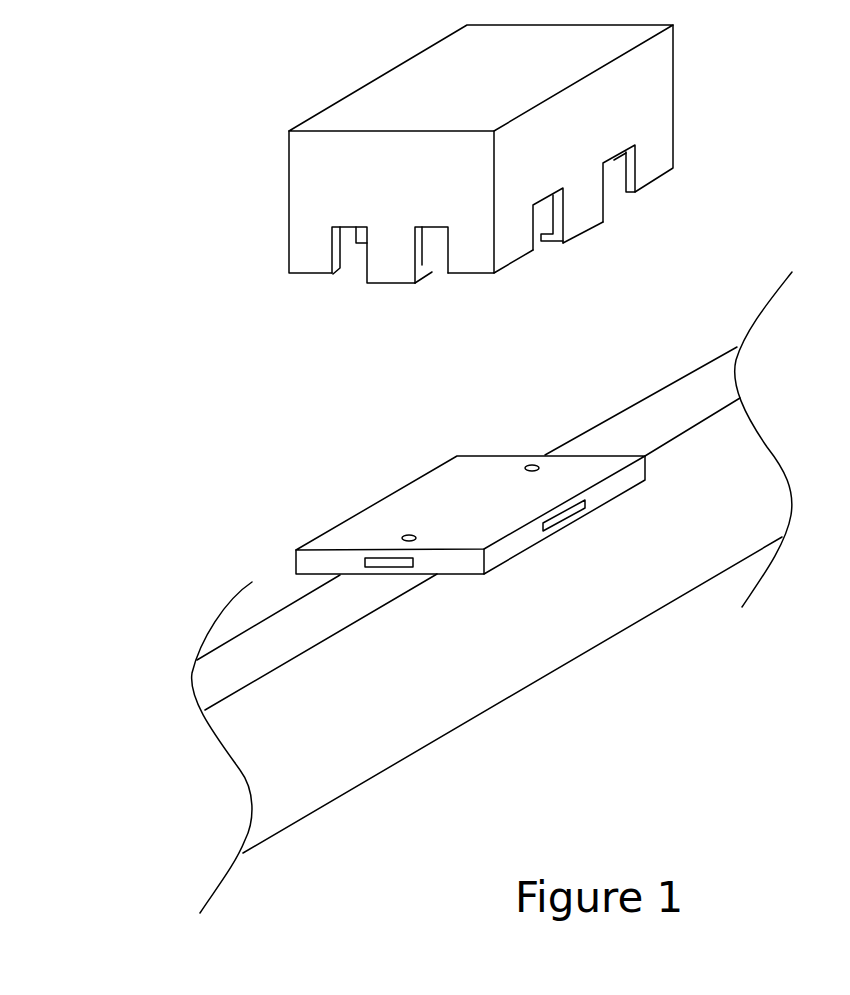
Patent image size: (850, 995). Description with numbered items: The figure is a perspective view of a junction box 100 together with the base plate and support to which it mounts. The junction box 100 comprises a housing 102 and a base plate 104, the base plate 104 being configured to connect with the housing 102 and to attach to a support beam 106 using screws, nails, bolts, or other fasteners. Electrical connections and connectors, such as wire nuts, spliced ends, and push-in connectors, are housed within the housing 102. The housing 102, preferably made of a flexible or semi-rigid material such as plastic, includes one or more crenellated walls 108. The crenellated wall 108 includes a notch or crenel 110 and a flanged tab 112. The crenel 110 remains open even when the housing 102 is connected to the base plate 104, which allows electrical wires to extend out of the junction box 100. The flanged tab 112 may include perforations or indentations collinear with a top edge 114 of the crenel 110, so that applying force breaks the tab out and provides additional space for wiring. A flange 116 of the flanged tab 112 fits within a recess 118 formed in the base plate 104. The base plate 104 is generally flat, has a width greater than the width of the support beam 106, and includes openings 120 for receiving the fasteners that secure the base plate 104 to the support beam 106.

The junction box 100 is at (172, 90).
The housing 102 is at (703, 93).
The base plate 104 is at (307, 505).
The support beam 106 is at (665, 407).
The crenellated wall 108 is at (665, 147).
The crenel 110 is at (617, 162).
The flanged tab 112 is at (588, 217).
The top edge 114 is at (541, 195).
The flange 116 is at (431, 264).
The recess 118 is at (406, 566).
The openings 120 is at (531, 465).